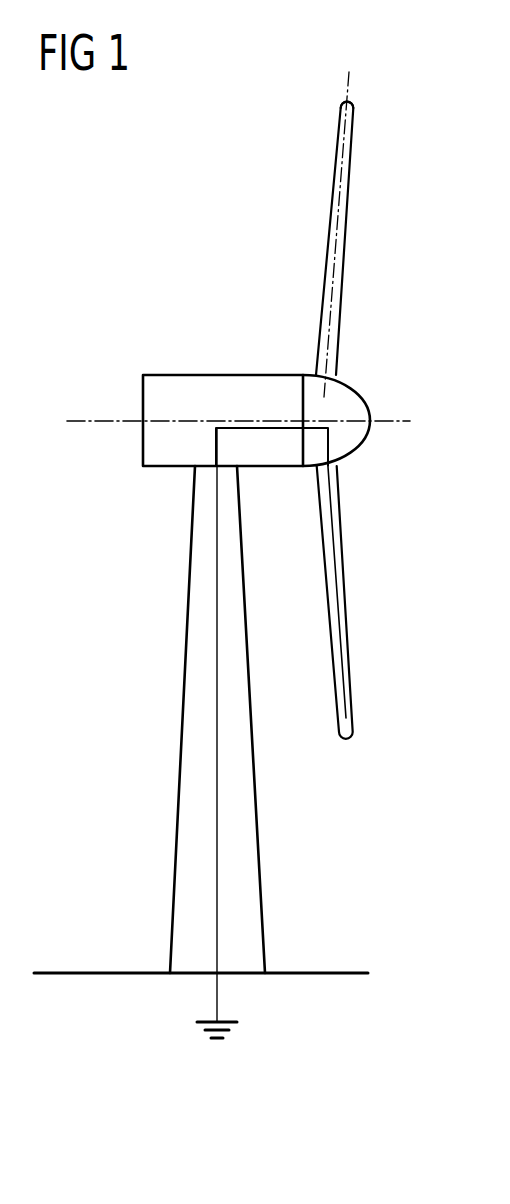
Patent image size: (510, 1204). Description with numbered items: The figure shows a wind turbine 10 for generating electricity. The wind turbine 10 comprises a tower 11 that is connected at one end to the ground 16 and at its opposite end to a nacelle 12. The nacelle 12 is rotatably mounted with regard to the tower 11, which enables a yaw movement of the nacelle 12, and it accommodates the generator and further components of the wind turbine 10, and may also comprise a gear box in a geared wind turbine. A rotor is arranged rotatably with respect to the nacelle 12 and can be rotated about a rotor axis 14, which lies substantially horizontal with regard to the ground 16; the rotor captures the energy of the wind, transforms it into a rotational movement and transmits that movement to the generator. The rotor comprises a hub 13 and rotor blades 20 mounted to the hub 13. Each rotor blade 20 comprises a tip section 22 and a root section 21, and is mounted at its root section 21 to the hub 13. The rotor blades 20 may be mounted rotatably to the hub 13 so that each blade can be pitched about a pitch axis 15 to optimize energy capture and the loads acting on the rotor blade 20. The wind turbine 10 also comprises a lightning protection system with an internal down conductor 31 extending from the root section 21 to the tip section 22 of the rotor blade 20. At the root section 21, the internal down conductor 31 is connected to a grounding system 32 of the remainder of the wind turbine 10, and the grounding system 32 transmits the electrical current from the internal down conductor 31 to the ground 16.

The wind turbine 10 is at (112, 606).
The tower 11 is at (237, 803).
The nacelle 12 is at (193, 373).
The hub 13 is at (363, 397).
The rotor axis 14 is at (85, 420).
The pitch axis 15 is at (347, 87).
The ground 16 is at (108, 972).
The rotor blade 20 is at (388, 227).
The root section 21 is at (335, 363).
The tip section 22 is at (351, 123).
The internal down conductor 31 is at (338, 600).
The grounding system 32 is at (329, 441).